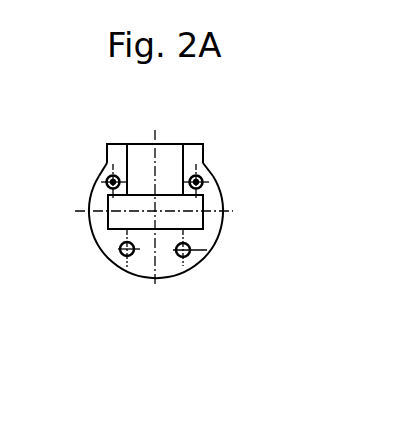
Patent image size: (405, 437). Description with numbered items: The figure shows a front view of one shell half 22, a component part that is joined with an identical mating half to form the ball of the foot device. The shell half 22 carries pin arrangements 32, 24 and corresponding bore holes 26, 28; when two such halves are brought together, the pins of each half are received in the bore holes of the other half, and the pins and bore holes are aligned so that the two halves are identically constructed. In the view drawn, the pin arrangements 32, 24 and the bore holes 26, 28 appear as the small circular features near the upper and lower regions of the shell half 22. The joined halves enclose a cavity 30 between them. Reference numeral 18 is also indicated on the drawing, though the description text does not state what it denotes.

The circular flange 18 is at (215, 185).
The shell half 22 is at (213, 172).
The pin arrangement 24 is at (195, 244).
The bore hole 26 is at (120, 253).
The bore hole 28 is at (110, 183).
The cavity 30 is at (168, 158).
The pin arrangement 32 is at (205, 176).